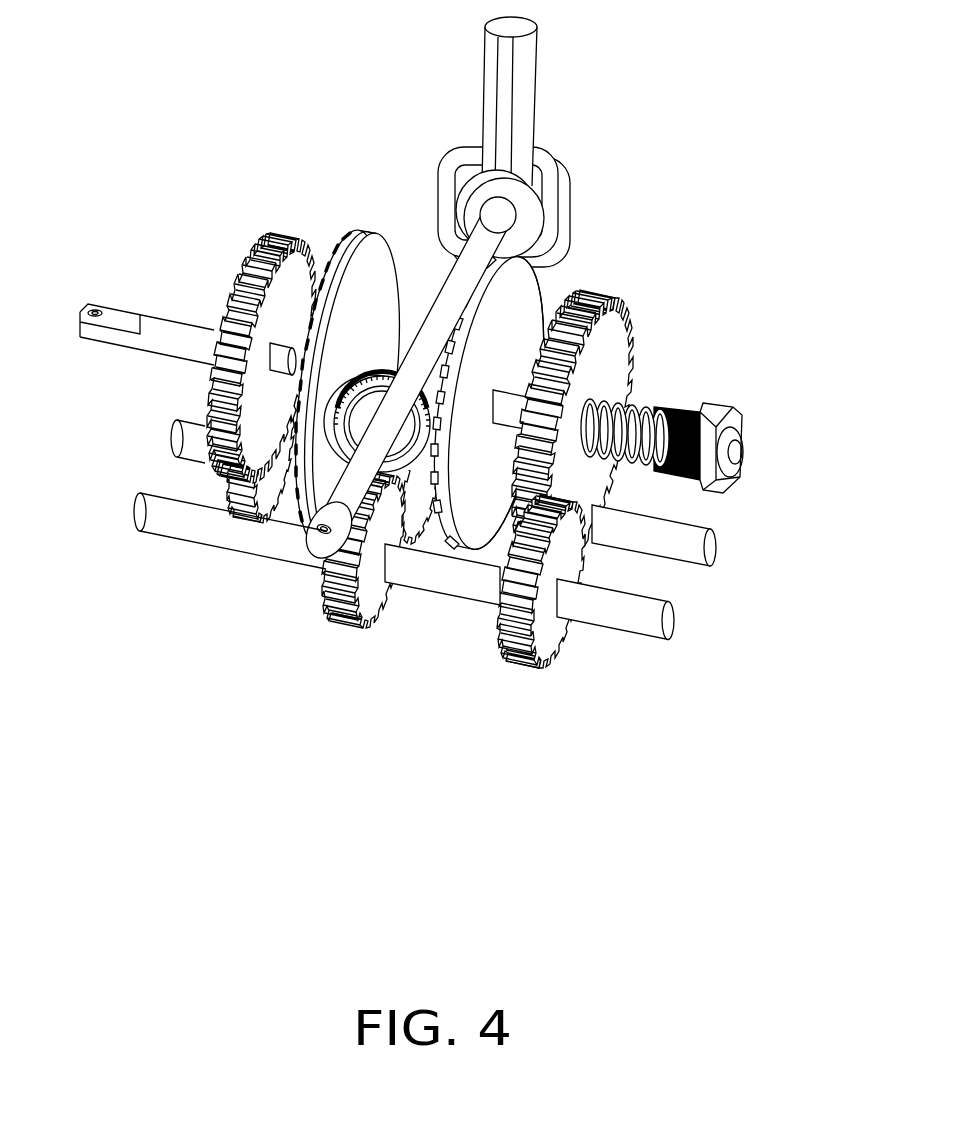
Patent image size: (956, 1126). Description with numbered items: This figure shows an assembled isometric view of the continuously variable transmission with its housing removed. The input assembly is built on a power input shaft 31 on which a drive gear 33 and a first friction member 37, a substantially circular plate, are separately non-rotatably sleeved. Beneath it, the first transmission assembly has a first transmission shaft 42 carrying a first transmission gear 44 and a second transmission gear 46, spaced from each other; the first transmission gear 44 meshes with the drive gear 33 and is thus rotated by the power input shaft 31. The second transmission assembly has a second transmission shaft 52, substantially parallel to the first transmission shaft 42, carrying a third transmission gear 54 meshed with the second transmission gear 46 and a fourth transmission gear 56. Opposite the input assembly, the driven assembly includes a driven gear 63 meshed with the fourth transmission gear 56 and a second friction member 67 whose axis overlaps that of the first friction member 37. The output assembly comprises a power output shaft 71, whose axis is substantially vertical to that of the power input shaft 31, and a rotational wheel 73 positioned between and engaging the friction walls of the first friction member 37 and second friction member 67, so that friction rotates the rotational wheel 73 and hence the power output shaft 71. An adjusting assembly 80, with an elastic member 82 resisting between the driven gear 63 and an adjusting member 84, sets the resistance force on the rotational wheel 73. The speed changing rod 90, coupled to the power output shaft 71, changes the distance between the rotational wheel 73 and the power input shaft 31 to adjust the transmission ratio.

The power input shaft 31 is at (168, 328).
The drive gear 33 is at (247, 248).
The first friction member 37 is at (373, 250).
The first transmission shaft 42 is at (185, 437).
The first transmission gear 44 is at (243, 510).
The second transmission gear 46 is at (412, 553).
The second transmission shaft 52 is at (152, 512).
The third transmission gear 54 is at (352, 603).
The fourth transmission gear 56 is at (516, 657).
The driven gear 63 is at (607, 355).
The second friction member 67 is at (527, 298).
The power output shaft 71 is at (487, 222).
The rotational wheel 73 is at (353, 427).
The adjusting assembly 80 is at (702, 413).
The elastic member 82 is at (680, 418).
The adjusting member 84 is at (720, 418).
The speed changing rod 90 is at (523, 113).